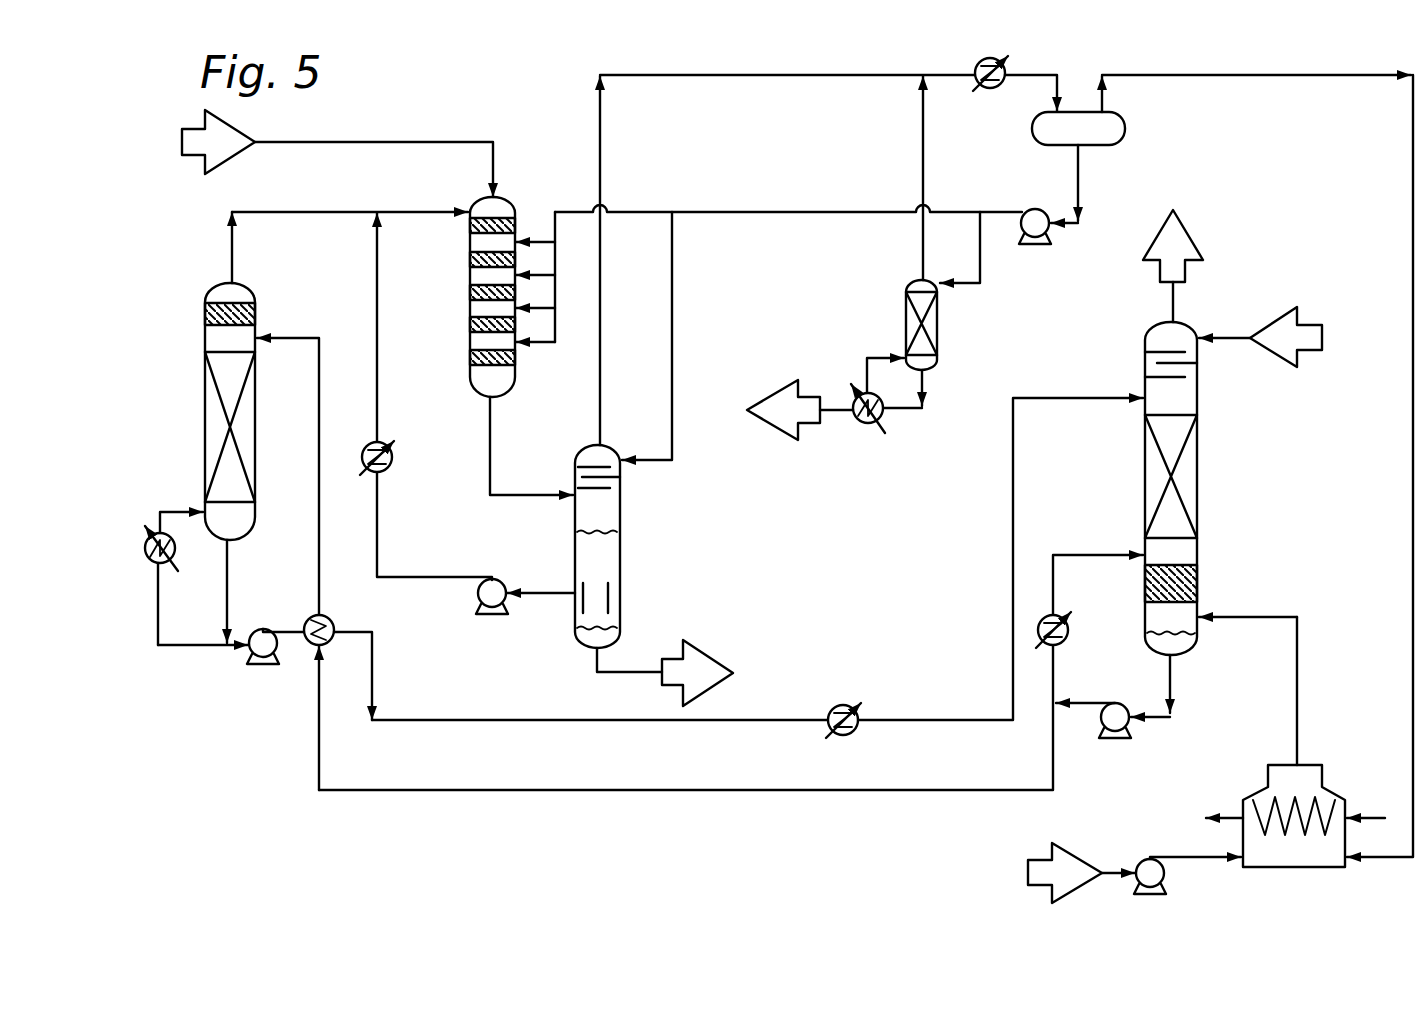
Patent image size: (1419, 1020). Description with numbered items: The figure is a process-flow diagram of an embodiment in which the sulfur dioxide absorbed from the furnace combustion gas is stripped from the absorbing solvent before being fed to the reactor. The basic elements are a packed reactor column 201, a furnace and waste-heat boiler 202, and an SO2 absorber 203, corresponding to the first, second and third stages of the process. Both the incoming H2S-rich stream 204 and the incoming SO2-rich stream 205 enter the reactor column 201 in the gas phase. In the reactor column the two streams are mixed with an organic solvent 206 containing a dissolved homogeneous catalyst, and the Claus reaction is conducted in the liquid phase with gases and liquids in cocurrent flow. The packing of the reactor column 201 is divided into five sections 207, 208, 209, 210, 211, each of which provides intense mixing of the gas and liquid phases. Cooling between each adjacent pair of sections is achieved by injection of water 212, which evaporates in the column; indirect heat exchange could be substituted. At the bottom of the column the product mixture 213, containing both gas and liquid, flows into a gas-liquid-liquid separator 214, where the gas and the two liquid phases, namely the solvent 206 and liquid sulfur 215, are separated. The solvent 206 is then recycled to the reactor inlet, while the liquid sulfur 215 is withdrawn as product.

The packed reactor column 201 is at (478, 269).
The furnace and waste-heat boiler 202 is at (1259, 789).
The SO2 absorber 203 is at (1199, 478).
The H2S-rich stream 204 is at (198, 160).
The SO2-rich stream 205 is at (352, 209).
The organic solvent 206 is at (375, 312).
The packed section 207 is at (470, 222).
The packed section 208 is at (470, 256).
The packed section 209 is at (470, 289).
The packed section 210 is at (470, 322).
The packed section 211 is at (470, 355).
The water 212 is at (583, 207).
The product mixture 213 is at (492, 465).
The gas-liquid-liquid separator 214 is at (622, 570).
The liquid sulfur 215 is at (708, 653).